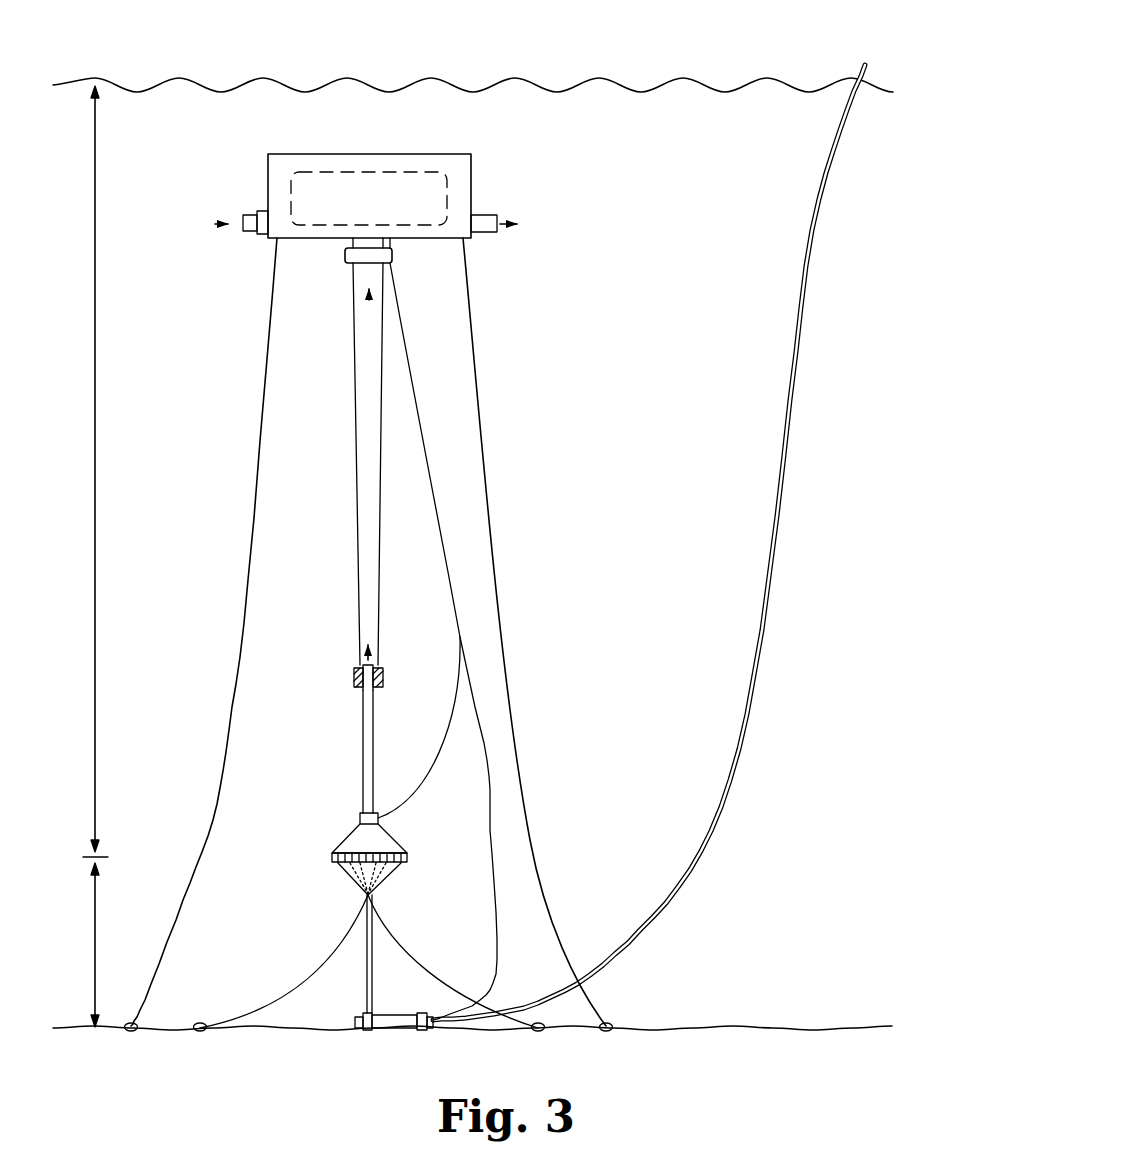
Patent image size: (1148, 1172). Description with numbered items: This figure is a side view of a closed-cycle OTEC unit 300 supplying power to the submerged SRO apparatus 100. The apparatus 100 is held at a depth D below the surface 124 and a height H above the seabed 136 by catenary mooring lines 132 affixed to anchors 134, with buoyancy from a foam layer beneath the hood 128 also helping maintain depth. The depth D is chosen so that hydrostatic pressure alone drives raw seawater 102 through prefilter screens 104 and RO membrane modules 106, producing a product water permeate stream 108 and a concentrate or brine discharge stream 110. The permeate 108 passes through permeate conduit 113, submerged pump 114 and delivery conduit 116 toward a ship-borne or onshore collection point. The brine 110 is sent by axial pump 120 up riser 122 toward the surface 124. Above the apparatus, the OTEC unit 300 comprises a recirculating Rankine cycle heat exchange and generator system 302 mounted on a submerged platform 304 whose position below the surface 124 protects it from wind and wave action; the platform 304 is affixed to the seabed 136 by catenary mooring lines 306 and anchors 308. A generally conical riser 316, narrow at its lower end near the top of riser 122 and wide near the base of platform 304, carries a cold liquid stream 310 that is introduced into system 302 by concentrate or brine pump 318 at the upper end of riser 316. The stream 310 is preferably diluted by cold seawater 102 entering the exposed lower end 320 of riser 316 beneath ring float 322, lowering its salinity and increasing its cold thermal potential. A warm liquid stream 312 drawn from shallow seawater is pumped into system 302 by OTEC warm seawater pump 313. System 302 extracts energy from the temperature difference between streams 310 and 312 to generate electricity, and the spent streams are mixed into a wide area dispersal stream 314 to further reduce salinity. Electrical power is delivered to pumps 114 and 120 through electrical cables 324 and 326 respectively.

The SRO apparatus 100 is at (404, 826).
The raw seawater 102 is at (356, 700).
The prefilter screens 104 is at (350, 868).
The RO membrane modules 106 is at (408, 858).
The product water permeate stream 108 is at (884, 56).
The concentrate or brine discharge stream 110 is at (365, 643).
The permeate conduit 113 is at (366, 978).
The submerged pump 114 is at (400, 1018).
The delivery conduit 116 is at (690, 870).
The axial pump 120 is at (360, 818).
The riser 122 is at (366, 784).
The surface 124 is at (432, 78).
The hood 128 is at (346, 840).
The catenary mooring lines 132 is at (262, 1016).
The anchors 134 is at (200, 1022).
The seabed 136 is at (693, 1025).
The closed-cycle OTEC unit 300 is at (486, 140).
The recirculating Rankine cycle heat exchange and generator system 302 is at (380, 172).
The submerged platform 304 is at (465, 185).
The catenary mooring lines 306 is at (230, 710).
The anchors 308 is at (130, 1022).
The cold liquid stream 310 is at (362, 291).
The warm liquid stream 312 is at (217, 229).
The OTEC warm seawater pump 313 is at (259, 211).
The wide area dispersal stream 314 is at (515, 229).
The riser 316 is at (366, 452).
The concentrate or brine pump 318 is at (390, 255).
The exposed lower end 320 is at (360, 692).
The ring float 322 is at (354, 673).
The electrical cable 324 is at (494, 963).
The electrical cable 326 is at (419, 794).
The depth D is at (94, 628).
The height H is at (95, 953).